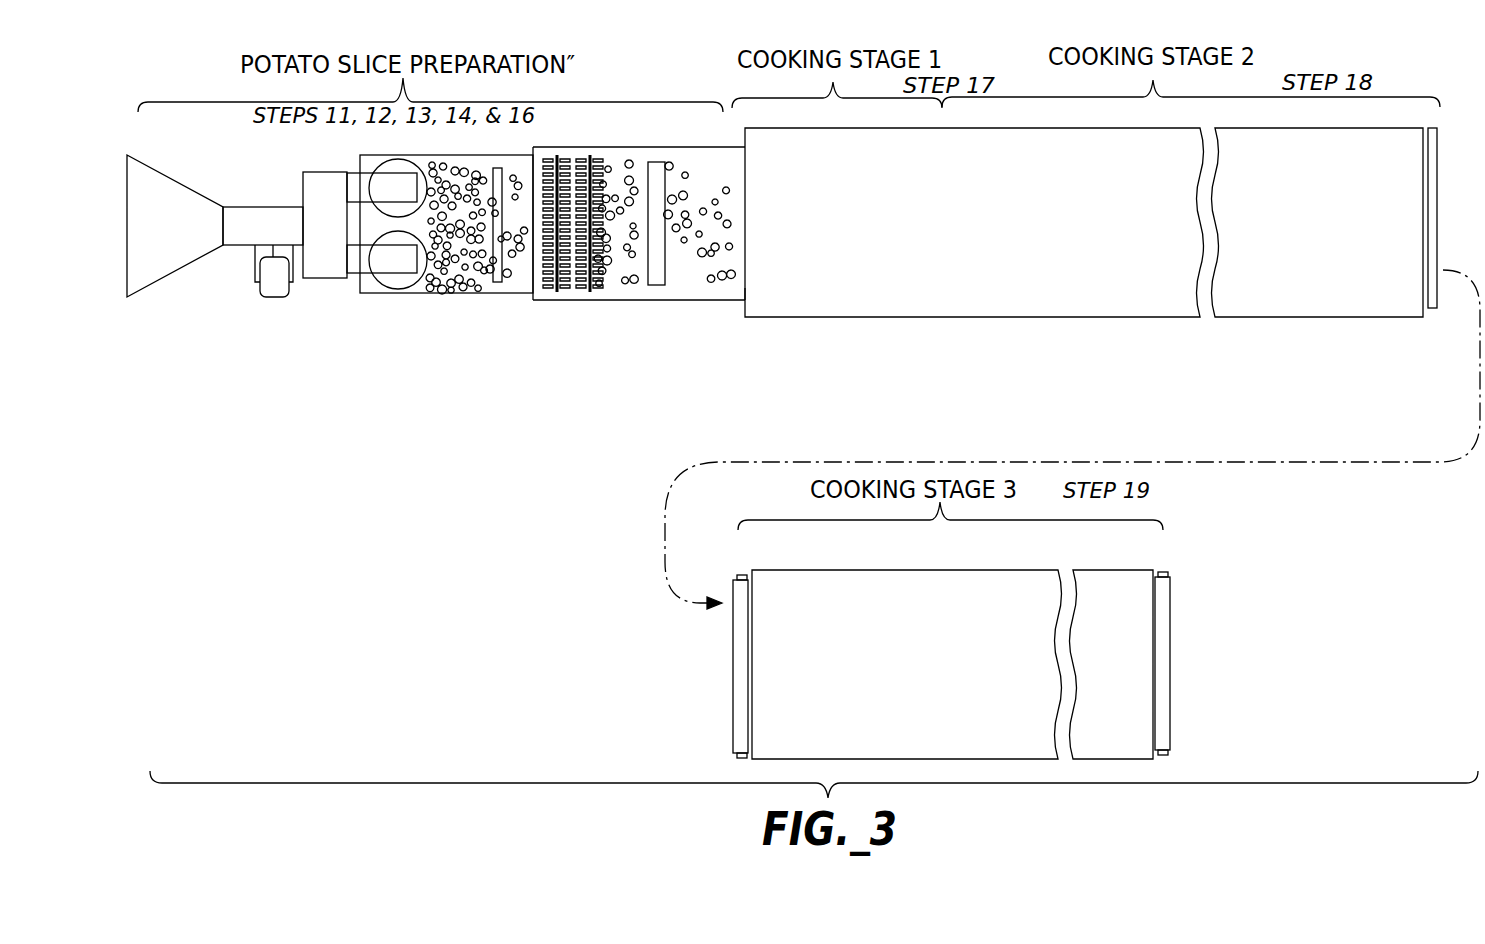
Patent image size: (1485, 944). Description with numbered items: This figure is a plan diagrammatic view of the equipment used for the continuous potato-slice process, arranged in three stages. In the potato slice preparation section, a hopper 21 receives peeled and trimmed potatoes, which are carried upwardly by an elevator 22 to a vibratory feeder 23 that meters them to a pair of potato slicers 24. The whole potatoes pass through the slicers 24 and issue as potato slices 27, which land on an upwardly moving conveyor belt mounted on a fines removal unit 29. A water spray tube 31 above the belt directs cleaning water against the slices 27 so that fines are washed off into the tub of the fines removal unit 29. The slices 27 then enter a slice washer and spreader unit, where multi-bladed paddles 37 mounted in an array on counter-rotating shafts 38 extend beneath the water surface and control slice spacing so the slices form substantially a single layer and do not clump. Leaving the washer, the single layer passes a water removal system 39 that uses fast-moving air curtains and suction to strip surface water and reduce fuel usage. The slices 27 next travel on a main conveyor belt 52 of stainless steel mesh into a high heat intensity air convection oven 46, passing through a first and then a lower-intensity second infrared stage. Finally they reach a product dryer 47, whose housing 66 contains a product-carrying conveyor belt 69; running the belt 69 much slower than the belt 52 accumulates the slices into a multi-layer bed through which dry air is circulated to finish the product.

The hopper 21 is at (165, 283).
The elevator 22 is at (270, 206).
The vibratory feeder 23 is at (328, 279).
The potato slicers 24 is at (397, 168).
The potato slices 27 is at (643, 147).
The fines removal unit 29 is at (520, 296).
The water spray tube 31 is at (497, 287).
The multi-bladed paddles 37 is at (577, 293).
The counter-rotating shafts 38 is at (583, 155).
The water removal system 39 is at (655, 287).
The air convection oven 46 is at (1028, 317).
The product dryer 47 is at (1130, 568).
The main conveyor belt 52 is at (745, 288).
The dryer housing 66 is at (896, 656).
The product-carrying conveyor belt 69 is at (1170, 707).